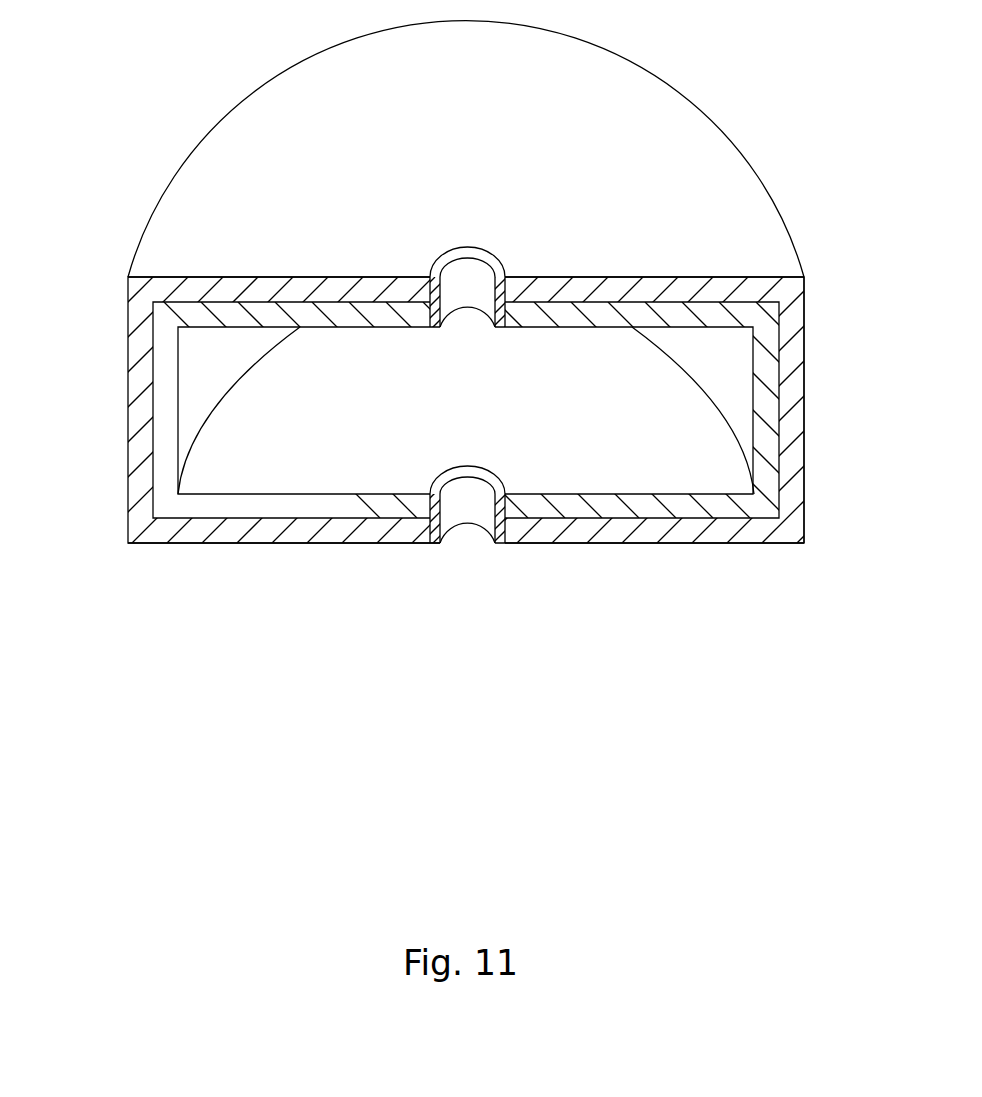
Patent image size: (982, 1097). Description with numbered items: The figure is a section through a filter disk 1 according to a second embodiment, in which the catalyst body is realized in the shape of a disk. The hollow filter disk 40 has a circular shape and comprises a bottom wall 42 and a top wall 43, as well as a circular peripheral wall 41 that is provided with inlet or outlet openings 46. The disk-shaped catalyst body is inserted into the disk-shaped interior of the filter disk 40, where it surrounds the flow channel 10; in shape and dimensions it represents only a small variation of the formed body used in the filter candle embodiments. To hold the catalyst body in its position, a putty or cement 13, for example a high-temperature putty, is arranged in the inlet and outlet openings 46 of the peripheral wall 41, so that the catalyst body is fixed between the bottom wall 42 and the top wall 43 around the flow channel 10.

The optical element 1 is at (127, 392).
The hollow filter disk 40 is at (127, 392).
The circular peripheral wall 41 is at (795, 437).
The bottom wall 42 is at (615, 533).
The top wall 43 is at (683, 290).
The inlet or outlet openings 46 is at (480, 278).
The putty or cement 13 is at (430, 290).
The flow channel 10 is at (345, 452).